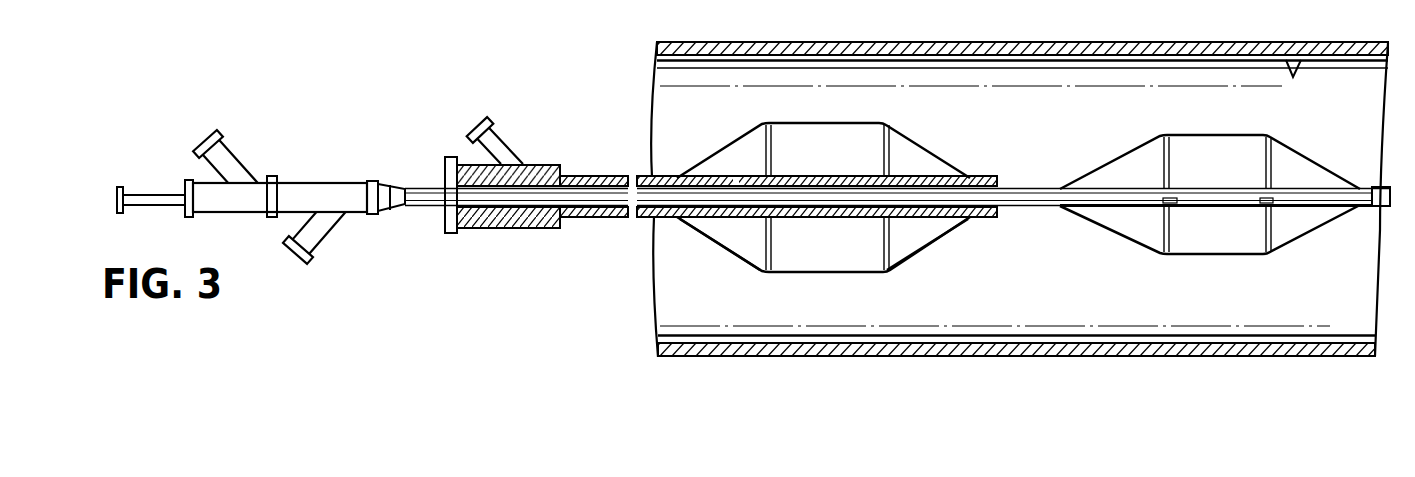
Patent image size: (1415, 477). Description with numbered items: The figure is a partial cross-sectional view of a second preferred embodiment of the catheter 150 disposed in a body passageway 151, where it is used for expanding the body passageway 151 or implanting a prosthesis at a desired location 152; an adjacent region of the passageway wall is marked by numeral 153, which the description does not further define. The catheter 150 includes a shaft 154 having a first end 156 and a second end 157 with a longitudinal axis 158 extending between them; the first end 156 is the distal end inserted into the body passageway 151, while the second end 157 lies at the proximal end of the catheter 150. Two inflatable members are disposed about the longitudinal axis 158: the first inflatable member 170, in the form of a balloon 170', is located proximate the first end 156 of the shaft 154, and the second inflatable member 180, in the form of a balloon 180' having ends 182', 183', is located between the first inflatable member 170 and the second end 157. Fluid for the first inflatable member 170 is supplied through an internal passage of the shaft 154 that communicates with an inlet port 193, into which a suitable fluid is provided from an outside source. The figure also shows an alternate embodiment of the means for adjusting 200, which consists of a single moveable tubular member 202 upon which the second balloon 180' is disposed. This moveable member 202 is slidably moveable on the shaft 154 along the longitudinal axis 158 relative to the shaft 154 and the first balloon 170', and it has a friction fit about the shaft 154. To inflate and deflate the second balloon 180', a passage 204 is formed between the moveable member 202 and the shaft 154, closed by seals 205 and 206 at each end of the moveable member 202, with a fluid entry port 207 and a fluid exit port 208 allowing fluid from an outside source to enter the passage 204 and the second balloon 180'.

The catheter 150 is at (302, 156).
The inlet port 193 is at (298, 258).
The second end of the shaft 157 is at (418, 228).
The seal 206 is at (438, 184).
The fluid entry port 207 is at (475, 132).
The means for adjusting 200 is at (577, 162).
The passage 204 is at (617, 176).
The moveable tubular member 202 is at (580, 219).
The fluid exit port 208 is at (735, 178).
The second inflatable member 180 is at (823, 137).
The second balloon 180' is at (827, 136).
The second end of the second balloon 183' is at (720, 272).
The first end of the second balloon 182' is at (927, 272).
The seal 205 is at (987, 216).
The shaft 154 is at (1003, 210).
The longitudinal axis 158 is at (1038, 197).
The first inflatable member 170 is at (1210, 128).
The first balloon 170' is at (1218, 127).
The first end of the shaft 156 is at (1360, 213).
The stenosis 153 is at (1302, 50).
The desired location 152 is at (1065, 42).
The body passageway 151 is at (1097, 359).